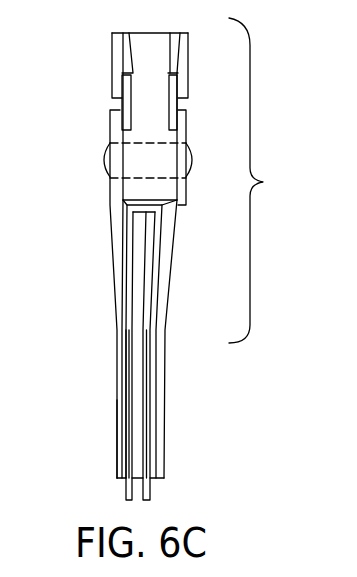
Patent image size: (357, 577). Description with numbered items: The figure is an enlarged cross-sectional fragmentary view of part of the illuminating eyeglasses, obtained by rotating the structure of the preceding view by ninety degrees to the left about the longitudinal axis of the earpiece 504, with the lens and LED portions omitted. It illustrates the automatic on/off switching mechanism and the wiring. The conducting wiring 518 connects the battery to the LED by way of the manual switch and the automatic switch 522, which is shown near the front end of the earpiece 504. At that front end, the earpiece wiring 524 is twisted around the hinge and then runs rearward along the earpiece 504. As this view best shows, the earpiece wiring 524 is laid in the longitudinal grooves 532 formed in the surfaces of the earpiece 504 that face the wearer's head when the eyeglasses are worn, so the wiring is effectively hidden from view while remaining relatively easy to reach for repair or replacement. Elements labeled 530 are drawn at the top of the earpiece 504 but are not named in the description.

The earpiece 504 is at (116, 432).
The conducting wiring 518 is at (264, 180).
The automatic switch 522 is at (111, 100).
The earpiece wiring 524 is at (122, 200).
The housing arms 530 is at (112, 42).
The longitudinal grooves 532 is at (133, 399).